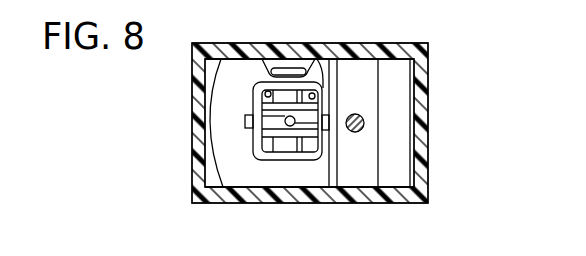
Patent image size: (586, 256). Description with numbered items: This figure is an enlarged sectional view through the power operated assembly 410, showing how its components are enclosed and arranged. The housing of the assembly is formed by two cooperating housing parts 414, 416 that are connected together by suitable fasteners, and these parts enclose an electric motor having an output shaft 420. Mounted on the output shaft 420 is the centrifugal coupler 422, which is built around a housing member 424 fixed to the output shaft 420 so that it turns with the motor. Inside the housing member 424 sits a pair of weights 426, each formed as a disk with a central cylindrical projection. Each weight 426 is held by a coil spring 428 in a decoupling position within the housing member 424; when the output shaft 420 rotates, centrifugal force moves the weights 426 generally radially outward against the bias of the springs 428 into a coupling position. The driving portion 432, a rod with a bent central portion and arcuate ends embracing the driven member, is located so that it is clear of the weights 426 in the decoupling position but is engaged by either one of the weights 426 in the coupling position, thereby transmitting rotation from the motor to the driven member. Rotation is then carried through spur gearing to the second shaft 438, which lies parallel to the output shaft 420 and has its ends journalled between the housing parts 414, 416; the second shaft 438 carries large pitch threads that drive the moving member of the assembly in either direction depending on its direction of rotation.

The power operated assembly 410 is at (366, 40).
The housing part 414 is at (293, 203).
The housing part 416 is at (275, 43).
The output shaft 420 is at (293, 122).
The centrifugal coupler 422 is at (246, 84).
The housing member 424 is at (323, 142).
The weight 426 is at (285, 148).
The coil spring 428 is at (320, 43).
The driving portion 432 is at (246, 43).
The second shaft 438 is at (364, 121).